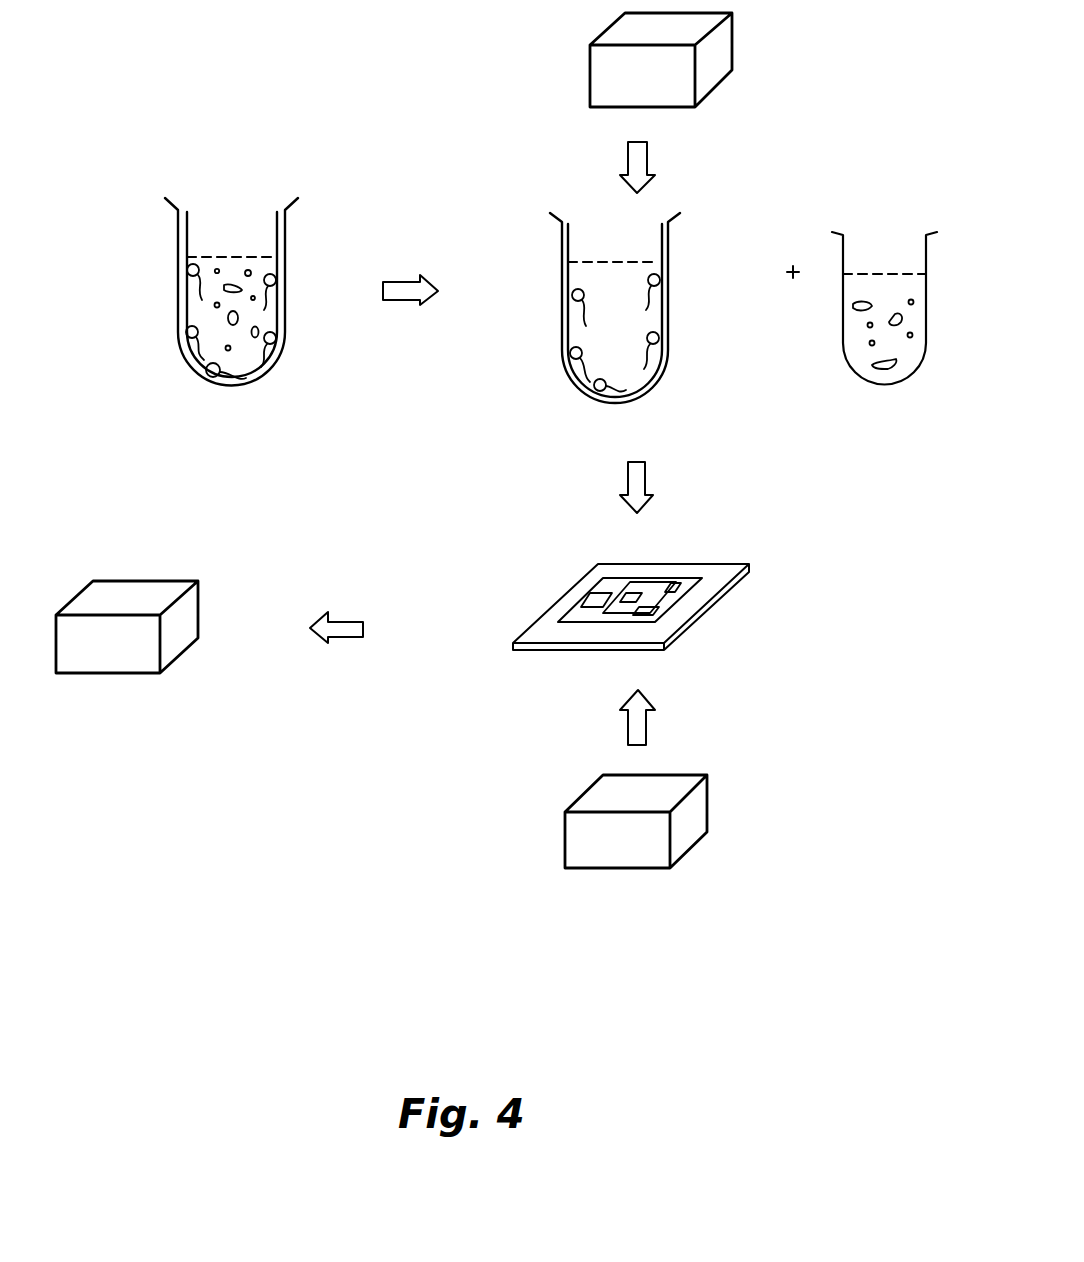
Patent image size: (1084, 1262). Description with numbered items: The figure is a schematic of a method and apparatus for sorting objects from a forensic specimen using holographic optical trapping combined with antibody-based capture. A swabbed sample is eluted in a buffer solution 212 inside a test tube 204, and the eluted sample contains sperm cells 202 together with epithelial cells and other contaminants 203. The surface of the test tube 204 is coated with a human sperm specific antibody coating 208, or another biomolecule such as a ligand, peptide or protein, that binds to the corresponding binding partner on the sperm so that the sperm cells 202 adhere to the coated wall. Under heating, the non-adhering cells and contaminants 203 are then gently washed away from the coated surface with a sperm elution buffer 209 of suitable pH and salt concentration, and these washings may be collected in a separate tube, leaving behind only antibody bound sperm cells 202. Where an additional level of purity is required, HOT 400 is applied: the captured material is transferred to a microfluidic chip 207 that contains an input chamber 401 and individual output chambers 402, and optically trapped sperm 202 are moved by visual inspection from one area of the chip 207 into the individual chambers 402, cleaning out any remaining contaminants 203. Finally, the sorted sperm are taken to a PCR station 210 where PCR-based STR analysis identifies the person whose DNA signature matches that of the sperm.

The sperm cells 202 is at (190, 318).
The contaminants 203 is at (222, 298).
The test tube 204 is at (283, 318).
The microfluidic chip 207 is at (715, 607).
The sperm specific antibody coating 208 is at (283, 243).
The sperm elution buffer 209 is at (910, 360).
The PCR station 210 is at (180, 642).
The buffer solution 212 is at (250, 364).
The HOT 400 is at (727, 57).
The input chamber 401 is at (601, 596).
The individual output chambers 402 is at (672, 590).